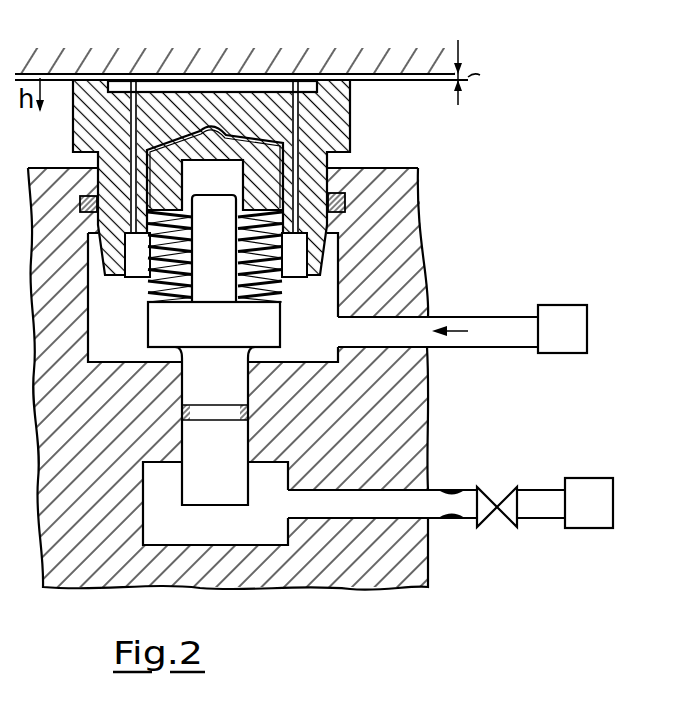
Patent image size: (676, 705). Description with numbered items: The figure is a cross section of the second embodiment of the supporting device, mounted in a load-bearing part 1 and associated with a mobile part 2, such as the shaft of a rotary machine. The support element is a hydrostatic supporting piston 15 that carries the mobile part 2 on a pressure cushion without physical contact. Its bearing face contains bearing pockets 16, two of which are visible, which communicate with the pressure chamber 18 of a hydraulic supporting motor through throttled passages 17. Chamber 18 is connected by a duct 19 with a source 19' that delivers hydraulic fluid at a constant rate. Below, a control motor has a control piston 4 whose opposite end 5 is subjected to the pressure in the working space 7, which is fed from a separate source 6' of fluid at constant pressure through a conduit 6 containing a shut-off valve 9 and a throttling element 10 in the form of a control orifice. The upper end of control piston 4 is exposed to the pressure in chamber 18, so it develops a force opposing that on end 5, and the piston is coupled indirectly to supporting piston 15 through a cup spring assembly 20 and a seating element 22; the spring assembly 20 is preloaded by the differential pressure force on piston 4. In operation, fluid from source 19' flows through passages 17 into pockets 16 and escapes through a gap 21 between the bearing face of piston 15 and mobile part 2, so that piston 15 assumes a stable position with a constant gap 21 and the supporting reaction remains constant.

The load-bearing part 1 is at (362, 575).
The mobile part 2 is at (348, 64).
The control piston 4 is at (197, 443).
The opposite end of piston 5 is at (208, 507).
The conduit 6 is at (426, 525).
The source of hydraulic fluid at constant pressure 6' is at (592, 530).
The working space 7 is at (268, 534).
The shut-off valve 9 is at (480, 489).
The throttling element 10 is at (447, 490).
The hydrostatic supporting piston 15 is at (347, 127).
The bearing pockets 16 is at (245, 86).
The throttled passages 17 is at (296, 82).
The pressure chamber 18 is at (313, 329).
The duct 19 is at (438, 348).
The source of hydraulic fluid under pressure 19' is at (562, 353).
The cup spring assembly 20 is at (150, 288).
The gap 21 is at (482, 72).
The seating element 22 is at (203, 148).